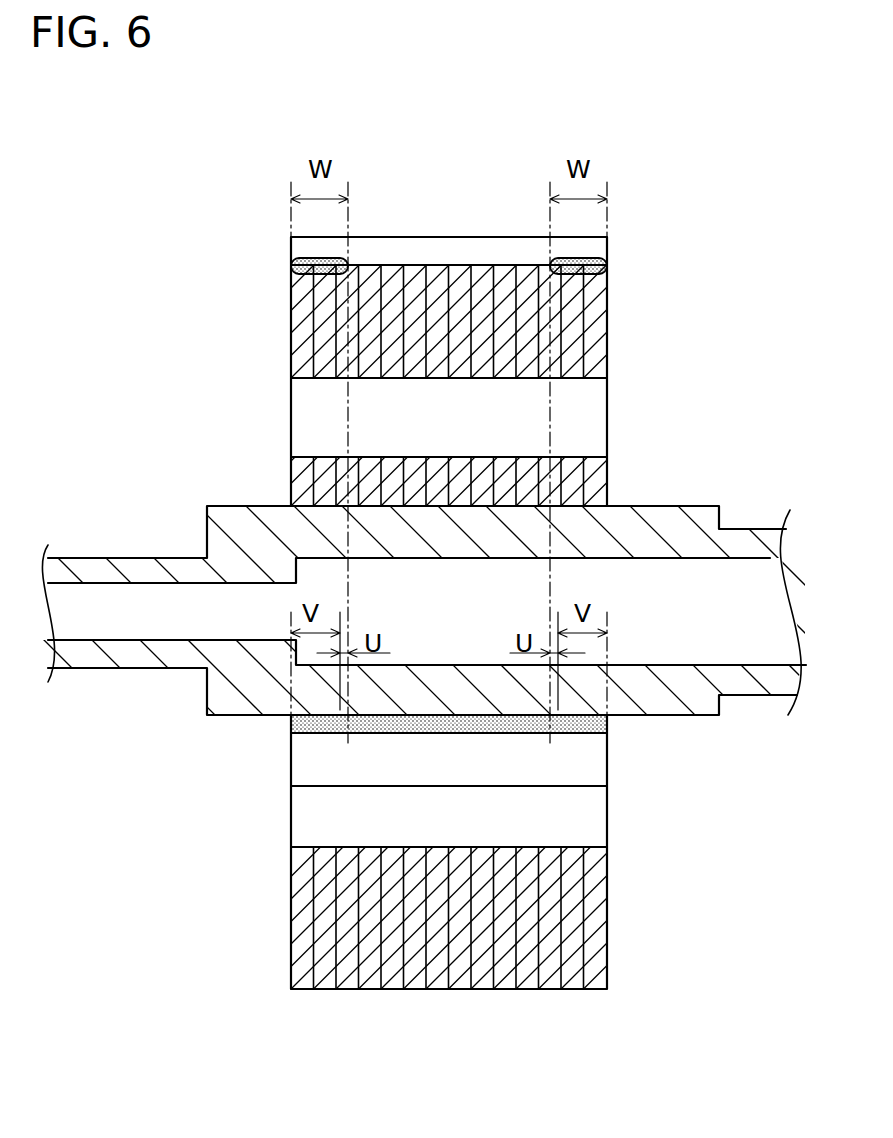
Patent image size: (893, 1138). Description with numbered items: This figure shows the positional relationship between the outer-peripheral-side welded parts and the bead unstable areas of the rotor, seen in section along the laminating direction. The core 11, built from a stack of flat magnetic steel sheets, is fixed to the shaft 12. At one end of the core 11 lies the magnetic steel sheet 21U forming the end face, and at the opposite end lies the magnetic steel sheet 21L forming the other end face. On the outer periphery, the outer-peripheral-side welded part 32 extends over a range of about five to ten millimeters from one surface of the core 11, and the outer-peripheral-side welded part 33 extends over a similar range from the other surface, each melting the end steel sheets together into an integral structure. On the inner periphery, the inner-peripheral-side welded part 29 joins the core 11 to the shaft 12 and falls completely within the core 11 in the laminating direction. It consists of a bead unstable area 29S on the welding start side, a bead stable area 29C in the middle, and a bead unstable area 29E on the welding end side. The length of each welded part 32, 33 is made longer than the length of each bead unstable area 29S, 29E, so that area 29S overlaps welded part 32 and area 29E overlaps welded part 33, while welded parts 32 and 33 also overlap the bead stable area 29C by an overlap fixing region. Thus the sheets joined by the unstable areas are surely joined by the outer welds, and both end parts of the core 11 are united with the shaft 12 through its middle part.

The core 11 is at (453, 1002).
The shaft 12 is at (133, 680).
The magnetic steel sheet forming an upper end face 21U is at (298, 342).
The magnetic steel sheet forming a lower end face 21L is at (598, 343).
The inner-peripheral-side welded part 29 is at (540, 798).
The bead unstable area on a welding end side 29E is at (573, 733).
The bead stable area 29C is at (455, 733).
The bead unstable area on a welding start side 29S is at (317, 733).
The outer-peripheral-side welded part 32 is at (293, 266).
The outer-peripheral-side welded part 33 is at (607, 260).